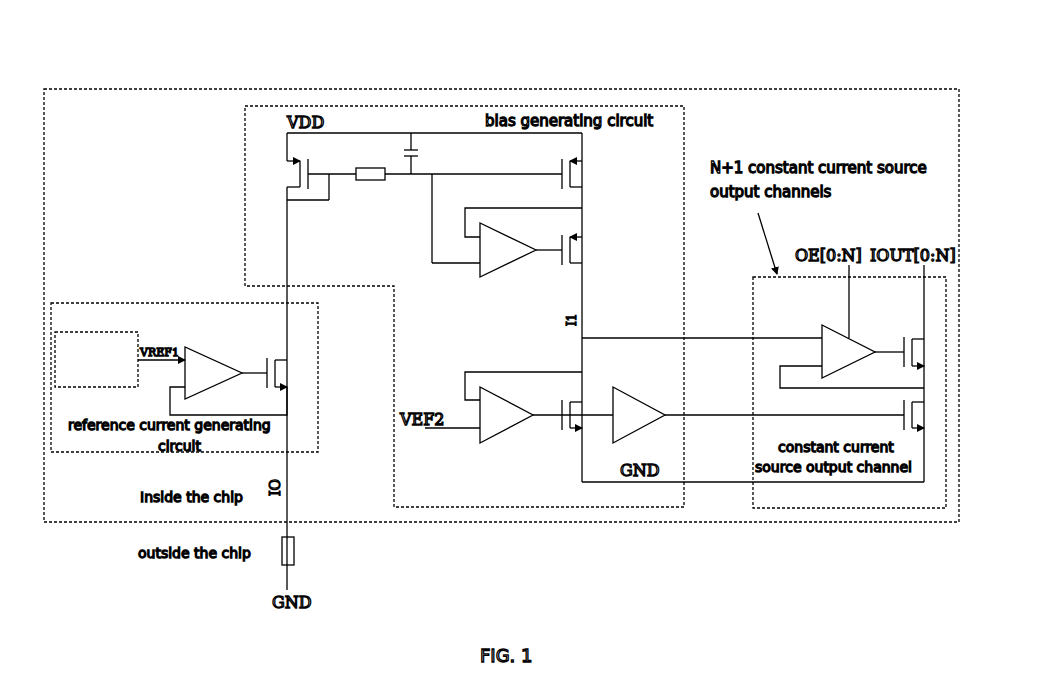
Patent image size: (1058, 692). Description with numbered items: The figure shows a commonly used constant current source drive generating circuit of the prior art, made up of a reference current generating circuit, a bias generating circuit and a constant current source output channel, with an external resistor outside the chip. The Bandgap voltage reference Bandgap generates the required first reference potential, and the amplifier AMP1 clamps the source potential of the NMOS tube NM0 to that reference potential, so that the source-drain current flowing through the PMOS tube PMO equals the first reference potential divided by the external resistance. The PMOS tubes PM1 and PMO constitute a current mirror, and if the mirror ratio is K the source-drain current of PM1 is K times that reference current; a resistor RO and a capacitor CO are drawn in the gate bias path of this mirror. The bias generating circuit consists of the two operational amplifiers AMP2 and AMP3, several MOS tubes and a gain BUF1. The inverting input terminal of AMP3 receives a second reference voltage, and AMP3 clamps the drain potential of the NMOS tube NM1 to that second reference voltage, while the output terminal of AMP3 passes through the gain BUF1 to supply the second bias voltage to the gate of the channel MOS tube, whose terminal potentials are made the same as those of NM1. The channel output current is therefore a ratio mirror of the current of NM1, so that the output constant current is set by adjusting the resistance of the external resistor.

The Bandgap voltage reference Bandgap is at (96, 359).
The PMOS tube PMO is at (319, 165).
The resistor R0 RO is at (370, 185).
The capacitor C0 CO is at (425, 153).
The PMOS tube PM1 is at (553, 169).
The operational amplifier AMP2 is at (508, 250).
The amplifier AMP1 is at (213, 373).
The NMOS tube NM0 is at (261, 362).
The operational amplifier AMP3 is at (506, 415).
The NMOS tube NM1 is at (561, 406).
The gain BUF1 is at (639, 415).